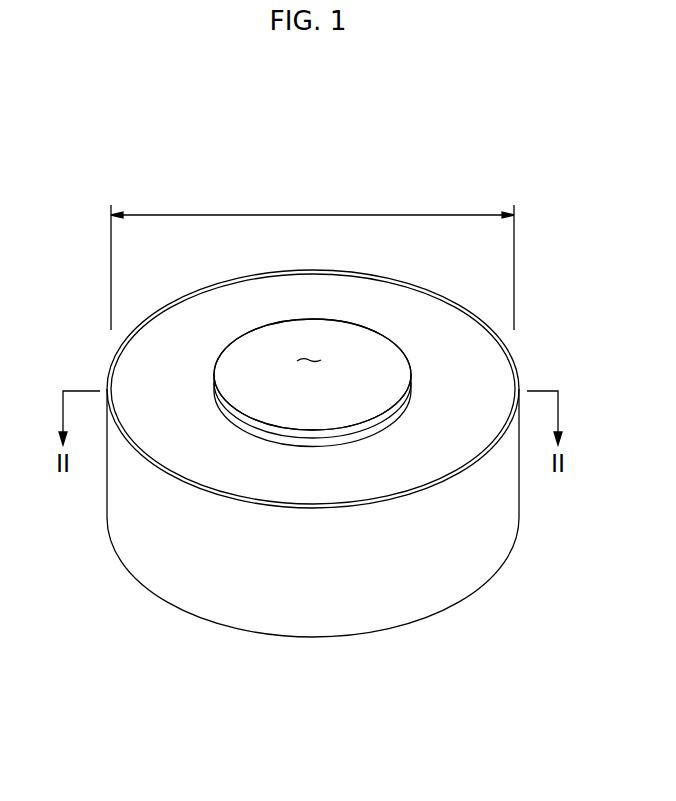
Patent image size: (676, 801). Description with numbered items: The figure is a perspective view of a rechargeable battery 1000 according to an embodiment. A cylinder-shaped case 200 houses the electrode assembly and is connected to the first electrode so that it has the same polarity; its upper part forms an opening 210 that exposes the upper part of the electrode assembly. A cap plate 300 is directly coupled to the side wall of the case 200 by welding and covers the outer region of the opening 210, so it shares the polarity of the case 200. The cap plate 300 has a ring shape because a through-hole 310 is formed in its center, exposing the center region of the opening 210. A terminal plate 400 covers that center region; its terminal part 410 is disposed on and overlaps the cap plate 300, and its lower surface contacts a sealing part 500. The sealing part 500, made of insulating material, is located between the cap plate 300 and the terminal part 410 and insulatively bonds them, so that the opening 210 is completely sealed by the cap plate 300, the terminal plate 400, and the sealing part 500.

The rechargeable battery 1000 is at (288, 133).
The case 200 is at (311, 637).
The opening 210 is at (312, 257).
The cap plate 300 is at (421, 310).
The through-hole 310 is at (308, 358).
The terminal plate 400 is at (243, 340).
The terminal part 410 is at (362, 337).
The sealing part 500 is at (263, 437).